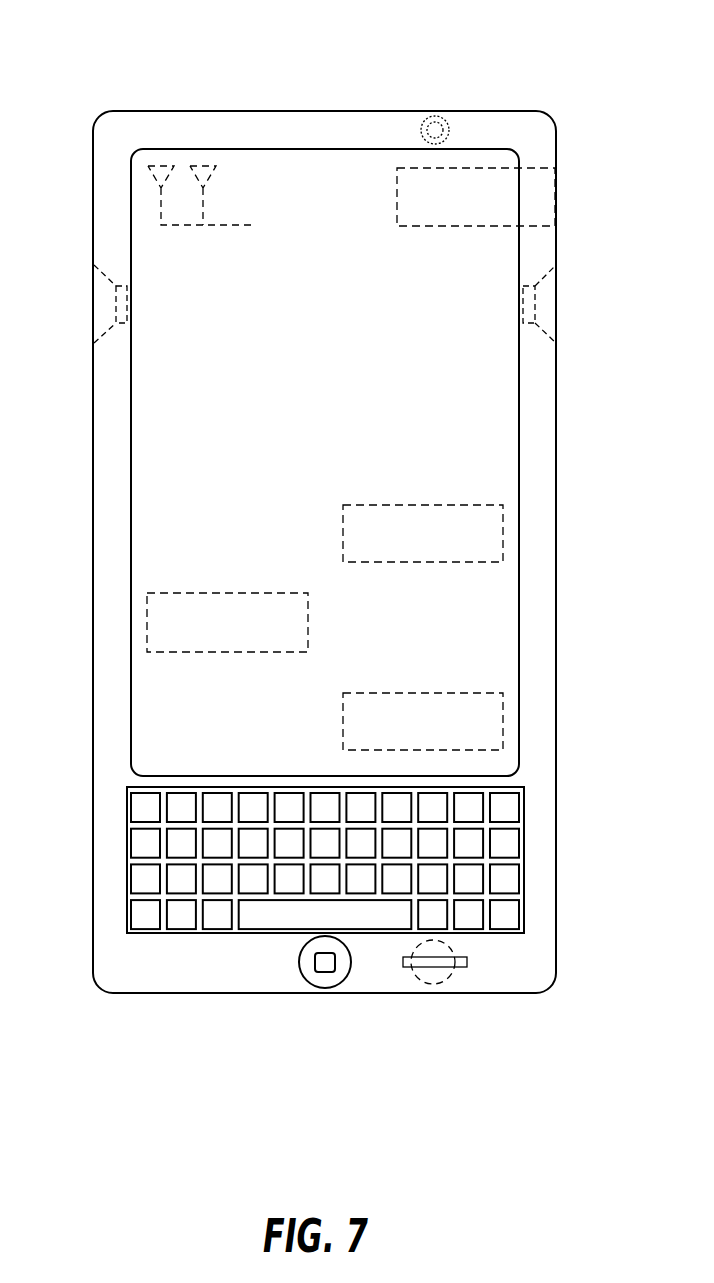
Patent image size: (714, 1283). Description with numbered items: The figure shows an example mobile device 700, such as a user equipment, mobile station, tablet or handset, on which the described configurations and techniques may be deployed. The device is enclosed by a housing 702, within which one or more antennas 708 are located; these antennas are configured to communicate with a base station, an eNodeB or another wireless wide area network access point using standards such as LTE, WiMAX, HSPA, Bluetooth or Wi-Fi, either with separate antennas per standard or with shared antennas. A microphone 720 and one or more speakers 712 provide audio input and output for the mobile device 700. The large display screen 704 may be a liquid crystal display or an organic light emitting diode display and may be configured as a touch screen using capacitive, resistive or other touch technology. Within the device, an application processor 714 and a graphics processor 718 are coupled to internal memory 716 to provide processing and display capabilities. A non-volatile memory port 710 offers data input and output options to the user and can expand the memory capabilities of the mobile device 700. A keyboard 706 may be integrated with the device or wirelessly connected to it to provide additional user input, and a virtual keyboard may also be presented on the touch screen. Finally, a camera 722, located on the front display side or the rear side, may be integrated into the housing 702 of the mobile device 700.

The mobile device 700 is at (545, 46).
The housing 702 is at (327, 109).
The display screen 704 is at (498, 412).
The keyboard 706 is at (525, 860).
The antennas 708 is at (202, 167).
The non-volatile memory port 710 is at (557, 198).
The speakers 712 is at (103, 302).
The application processor 714 is at (423, 505).
The internal memory 716 is at (423, 693).
The graphics processor 718 is at (227, 593).
The microphone 720 is at (438, 982).
The camera 722 is at (445, 115).